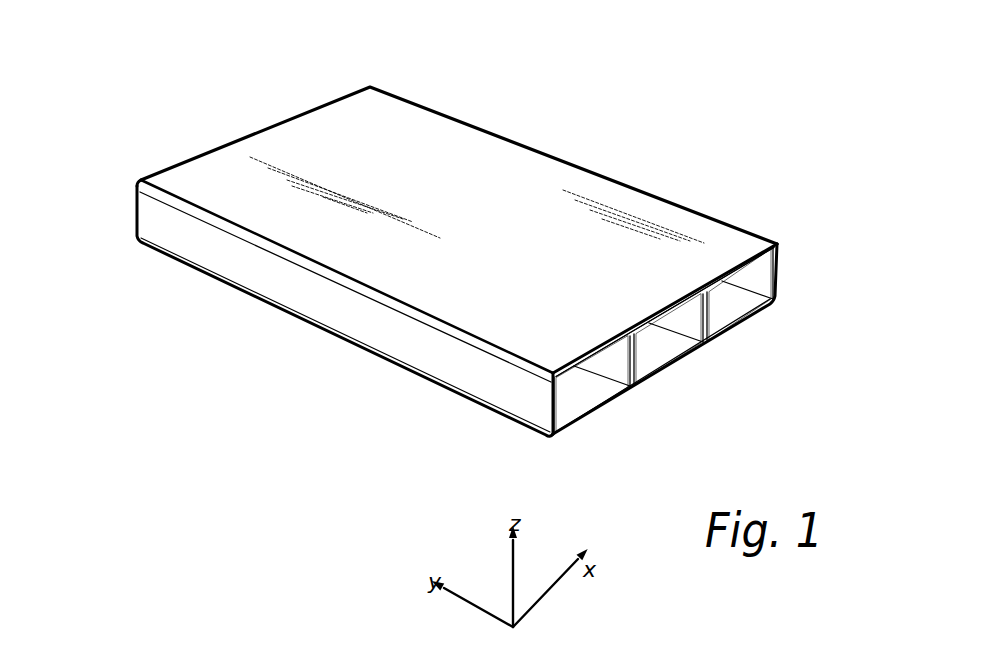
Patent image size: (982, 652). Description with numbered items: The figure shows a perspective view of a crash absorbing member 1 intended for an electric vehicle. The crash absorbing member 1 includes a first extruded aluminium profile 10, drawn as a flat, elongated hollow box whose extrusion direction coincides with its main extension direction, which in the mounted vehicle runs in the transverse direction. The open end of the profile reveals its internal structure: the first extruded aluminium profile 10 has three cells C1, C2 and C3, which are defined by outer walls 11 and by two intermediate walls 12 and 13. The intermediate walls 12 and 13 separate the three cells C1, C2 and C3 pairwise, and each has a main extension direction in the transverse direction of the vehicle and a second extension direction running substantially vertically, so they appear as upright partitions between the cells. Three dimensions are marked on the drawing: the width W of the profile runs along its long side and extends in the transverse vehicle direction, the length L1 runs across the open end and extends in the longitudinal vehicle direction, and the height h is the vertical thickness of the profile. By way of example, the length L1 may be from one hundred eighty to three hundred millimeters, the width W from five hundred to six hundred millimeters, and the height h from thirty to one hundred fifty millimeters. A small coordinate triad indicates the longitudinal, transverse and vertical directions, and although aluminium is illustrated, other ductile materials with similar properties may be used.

The crash absorbing member 1 is at (457, 234).
The first extruded aluminium profile 10 is at (393, 117).
The outer walls 11 is at (584, 223).
The intermediate wall 12 is at (635, 350).
The intermediate wall 13 is at (706, 307).
The cell C1 is at (574, 393).
The cell C2 is at (659, 355).
The cell C3 is at (731, 308).
The width W is at (550, 410).
The length L1 is at (550, 437).
The height h is at (775, 302).